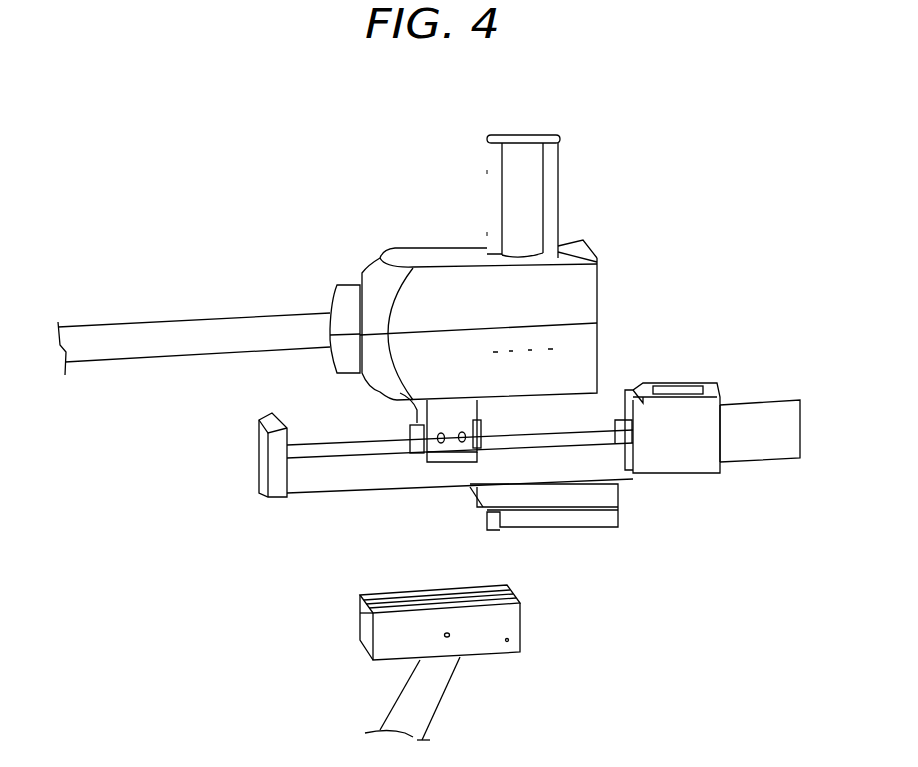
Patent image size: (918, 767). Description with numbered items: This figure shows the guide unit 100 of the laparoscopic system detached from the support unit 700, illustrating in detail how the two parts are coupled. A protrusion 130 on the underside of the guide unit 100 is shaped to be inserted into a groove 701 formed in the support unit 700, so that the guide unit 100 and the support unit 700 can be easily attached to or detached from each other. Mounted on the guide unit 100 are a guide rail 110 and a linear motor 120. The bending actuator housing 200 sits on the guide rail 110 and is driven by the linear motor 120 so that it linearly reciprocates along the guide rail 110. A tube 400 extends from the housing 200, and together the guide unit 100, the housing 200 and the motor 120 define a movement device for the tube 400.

The guide unit 100 is at (250, 457).
The guide rail 110 is at (323, 452).
The linear motor 120 is at (740, 417).
The protrusion 130 is at (600, 517).
The bending actuator housing 200 is at (415, 250).
The tube 400 is at (150, 337).
The support unit 700 is at (530, 623).
The groove 701 is at (373, 607).